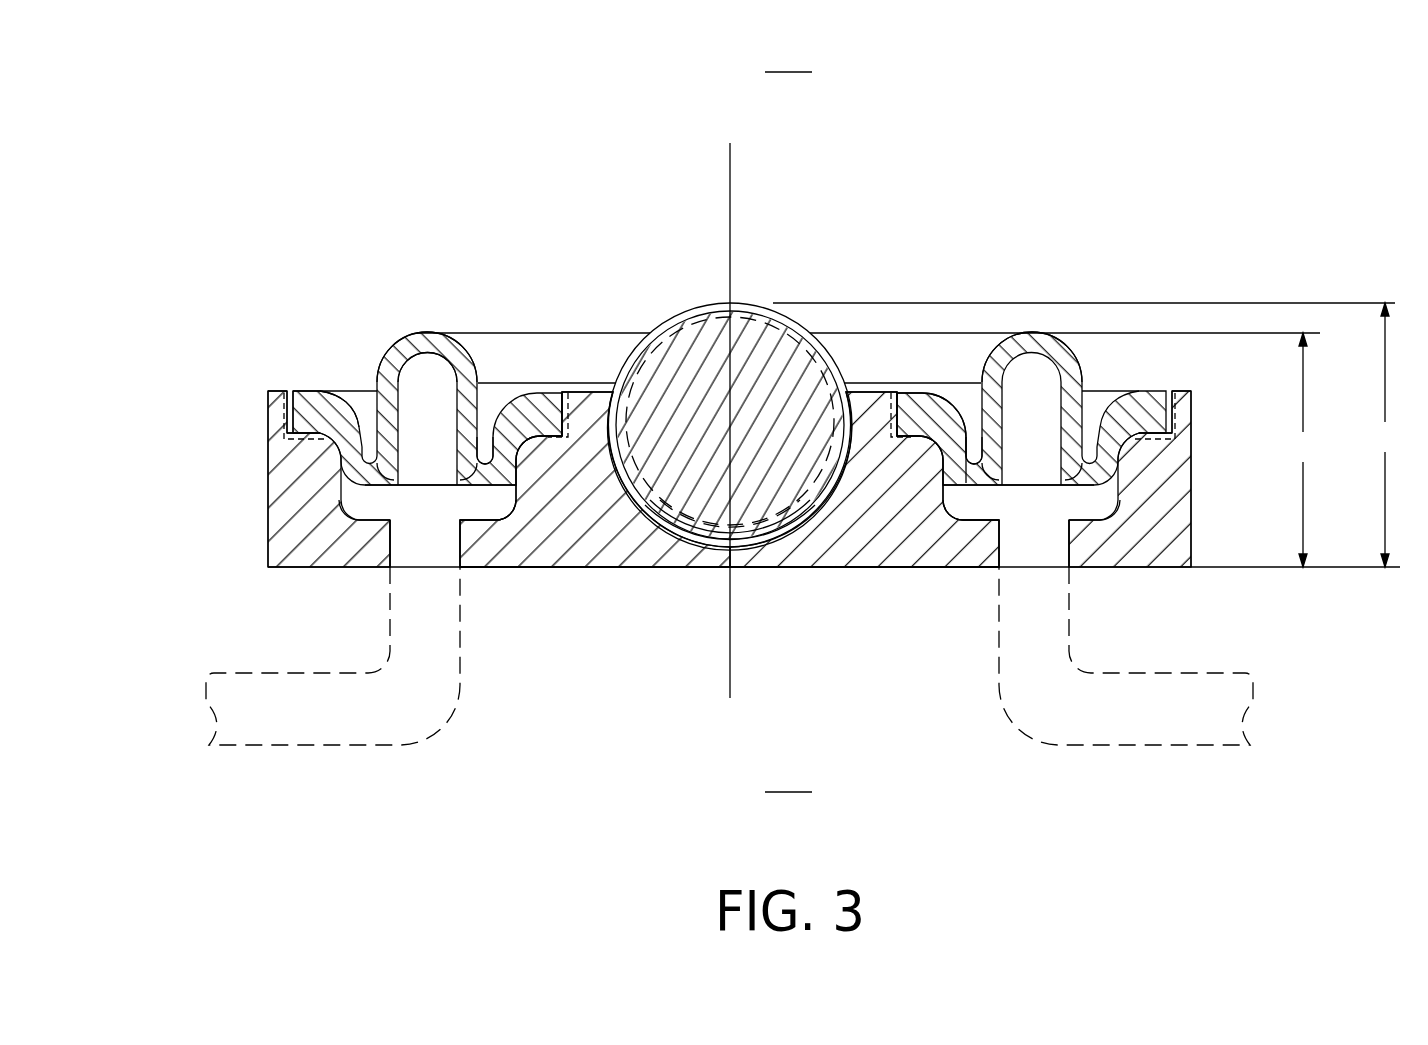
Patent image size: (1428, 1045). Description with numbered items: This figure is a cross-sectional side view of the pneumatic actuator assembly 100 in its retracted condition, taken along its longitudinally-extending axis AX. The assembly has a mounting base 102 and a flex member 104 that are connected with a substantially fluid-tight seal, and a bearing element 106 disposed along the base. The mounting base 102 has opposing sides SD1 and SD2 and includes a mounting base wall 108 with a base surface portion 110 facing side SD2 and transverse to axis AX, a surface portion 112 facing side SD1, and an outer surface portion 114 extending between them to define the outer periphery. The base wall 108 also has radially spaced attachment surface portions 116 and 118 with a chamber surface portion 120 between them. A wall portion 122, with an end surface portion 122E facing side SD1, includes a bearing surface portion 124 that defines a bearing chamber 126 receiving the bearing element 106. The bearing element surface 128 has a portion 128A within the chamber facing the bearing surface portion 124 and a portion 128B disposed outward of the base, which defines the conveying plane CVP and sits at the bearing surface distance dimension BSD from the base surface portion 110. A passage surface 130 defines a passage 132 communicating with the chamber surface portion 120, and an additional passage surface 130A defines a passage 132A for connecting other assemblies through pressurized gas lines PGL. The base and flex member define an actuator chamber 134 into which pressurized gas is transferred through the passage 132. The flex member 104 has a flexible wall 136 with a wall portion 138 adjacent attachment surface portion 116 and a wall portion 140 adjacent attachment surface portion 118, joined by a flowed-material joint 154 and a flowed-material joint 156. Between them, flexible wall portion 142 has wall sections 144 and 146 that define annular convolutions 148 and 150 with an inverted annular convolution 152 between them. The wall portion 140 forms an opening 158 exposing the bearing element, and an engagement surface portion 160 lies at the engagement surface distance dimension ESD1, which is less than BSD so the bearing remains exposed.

The pneumatic actuator assembly 100 is at (418, 135).
The mounting base 102 is at (588, 567).
The flex member 104 is at (397, 335).
The bearing element 106 is at (762, 310).
The mounting base wall 108 is at (637, 557).
The base surface portion 110 is at (688, 518).
The surface portion 112 is at (277, 390).
The outer surface portion 114 is at (268, 537).
The attachment surface portion 116 is at (292, 412).
The attachment surface portion 118 is at (590, 455).
The chamber surface portion 120 is at (992, 520).
The wall portion 122 is at (590, 407).
The end surface portion 122E is at (578, 407).
The bearing surface portion 124 is at (805, 522).
The bearing chamber 126 is at (765, 535).
The bearing element surface 128 is at (783, 308).
The portion of bearing element surface 128A is at (705, 520).
The portion of bearing element surface 128B is at (687, 320).
The passage surface 130 is at (387, 545).
The additional passage surface 130A is at (1070, 545).
The passage 132 is at (423, 560).
The additional passage 132A is at (1028, 562).
The actuator chamber 134 is at (352, 500).
The flexible wall 136 is at (380, 365).
The wall portion 138 is at (305, 412).
The wall portion 140 is at (930, 410).
The flexible wall portion 142 is at (455, 357).
The wall section 144 is at (372, 485).
The wall section 146 is at (483, 458).
The annular convolution 148 is at (1098, 488).
The annular convolution 150 is at (972, 490).
The inverted annular convolution 152 is at (413, 332).
The flowed-material joint 154 is at (292, 435).
The flowed-material joint 156 is at (858, 398).
The opening 158 is at (512, 338).
The engagement surface portion 160 is at (1030, 333).
The axis AX is at (732, 648).
The conveying surface or plane CVP is at (1115, 303).
The engagement surface distance dimension ESD1 is at (1303, 450).
The bearing surface distance dimension BSD is at (1385, 435).
The side SD1 is at (788, 57).
The side SD2 is at (788, 777).
The pressurized gas lines PGL is at (315, 748).